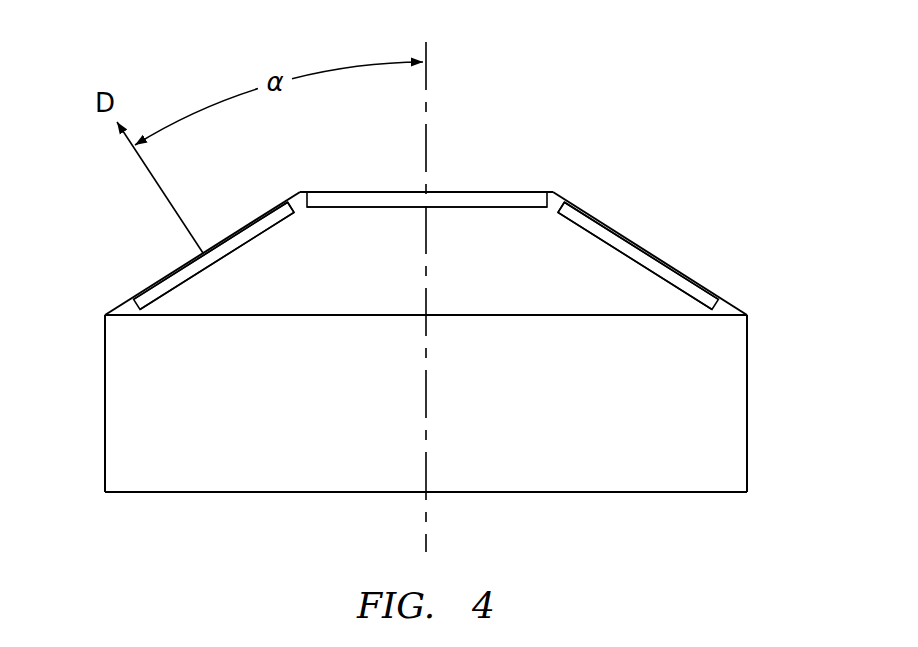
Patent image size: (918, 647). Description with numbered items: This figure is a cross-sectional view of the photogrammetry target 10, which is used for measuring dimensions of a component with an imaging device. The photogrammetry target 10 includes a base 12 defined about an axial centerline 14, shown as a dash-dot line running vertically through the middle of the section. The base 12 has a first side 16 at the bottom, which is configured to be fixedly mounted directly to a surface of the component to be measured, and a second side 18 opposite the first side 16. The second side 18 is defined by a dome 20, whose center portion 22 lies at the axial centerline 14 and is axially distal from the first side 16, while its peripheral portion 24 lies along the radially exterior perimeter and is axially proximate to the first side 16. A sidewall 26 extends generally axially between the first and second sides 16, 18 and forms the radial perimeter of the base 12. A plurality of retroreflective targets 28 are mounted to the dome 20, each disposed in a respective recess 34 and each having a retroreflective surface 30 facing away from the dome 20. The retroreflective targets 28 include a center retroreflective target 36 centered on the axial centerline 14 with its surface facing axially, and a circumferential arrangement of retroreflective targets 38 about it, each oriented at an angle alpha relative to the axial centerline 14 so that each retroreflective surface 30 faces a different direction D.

The photogrammetry target 10 is at (672, 130).
The base 12 is at (768, 397).
The axial centerline 14 is at (427, 53).
The first side 16 is at (633, 510).
The second side 18 is at (742, 295).
The dome 20 is at (105, 288).
The center portion 22 is at (530, 175).
The peripheral portion 24 is at (758, 308).
The sidewall 26 is at (103, 390).
The retroreflective targets 28 is at (163, 287).
The retroreflective surface 30 is at (240, 229).
The recess 34 is at (185, 290).
The center retroreflective target 36 is at (512, 213).
The circumferential arrangement of retroreflective targets 38 is at (277, 238).